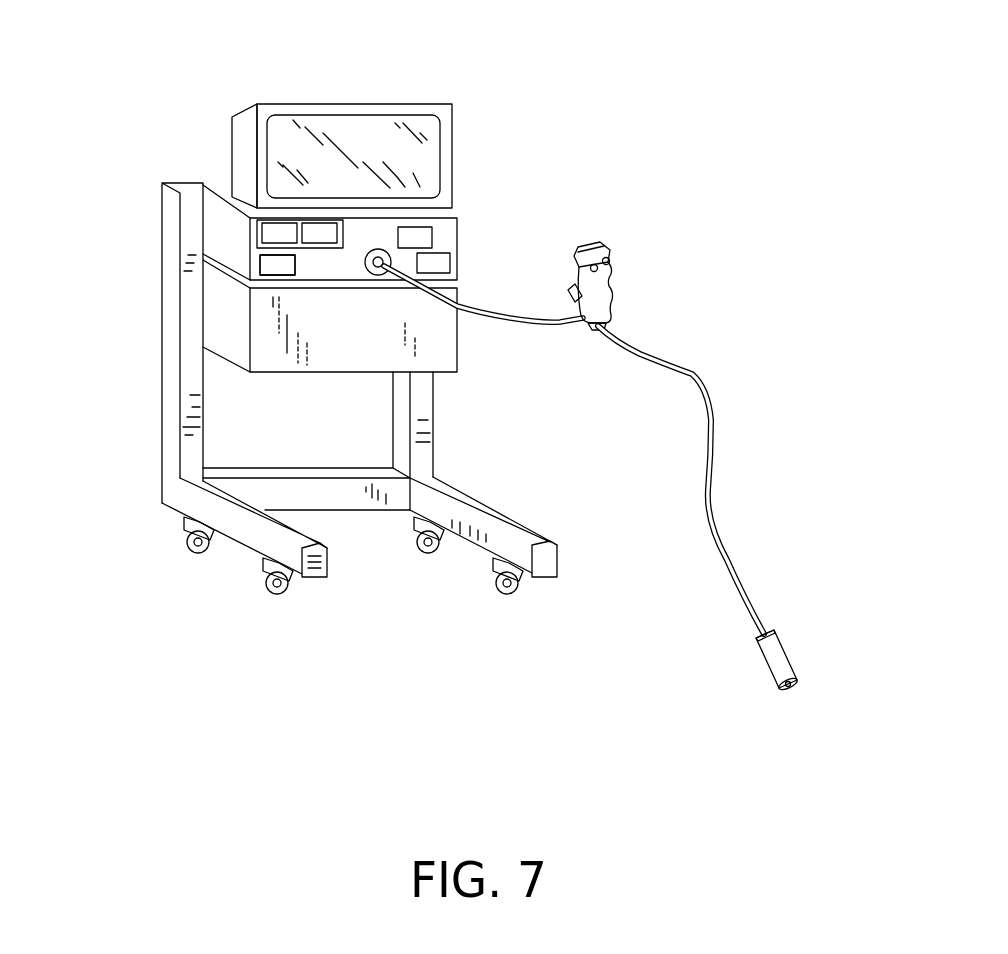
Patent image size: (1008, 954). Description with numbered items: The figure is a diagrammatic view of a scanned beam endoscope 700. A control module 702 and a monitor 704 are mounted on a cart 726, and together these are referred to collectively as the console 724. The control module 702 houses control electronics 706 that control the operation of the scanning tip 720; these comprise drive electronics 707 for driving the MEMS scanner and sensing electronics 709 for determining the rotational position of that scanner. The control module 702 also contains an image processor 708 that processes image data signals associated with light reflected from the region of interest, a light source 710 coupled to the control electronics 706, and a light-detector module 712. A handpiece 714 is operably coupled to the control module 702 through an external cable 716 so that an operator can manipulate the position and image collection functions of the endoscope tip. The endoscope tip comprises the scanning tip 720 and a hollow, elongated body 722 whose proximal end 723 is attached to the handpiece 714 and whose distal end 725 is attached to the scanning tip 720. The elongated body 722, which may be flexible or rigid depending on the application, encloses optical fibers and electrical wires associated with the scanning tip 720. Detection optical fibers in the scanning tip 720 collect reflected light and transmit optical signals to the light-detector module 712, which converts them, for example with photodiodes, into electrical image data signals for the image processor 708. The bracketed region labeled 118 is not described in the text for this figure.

The scanned beam endoscope 700 is at (596, 94).
The monitor 704 is at (233, 110).
The control electronics 706 is at (250, 218).
The control module 702 is at (252, 238).
The drive electronics 707 is at (260, 265).
The image processor 708 is at (295, 265).
The sensing electronics 709 is at (330, 247).
The light source 710 is at (432, 237).
The light-detector module 712 is at (450, 265).
The external cable 716 is at (535, 314).
The handpiece 714 is at (615, 322).
The proximal end 723 is at (597, 328).
The hollow, elongated body 722 is at (715, 460).
The distal end 725 is at (770, 628).
The scanning tip 720 is at (777, 615).
The fiber delivery assembly 118 is at (728, 290).
The console 724 is at (98, 175).
The cart 726 is at (168, 455).